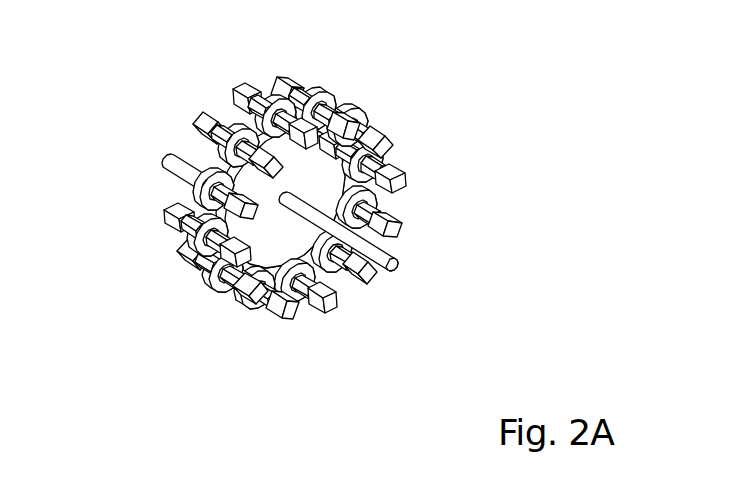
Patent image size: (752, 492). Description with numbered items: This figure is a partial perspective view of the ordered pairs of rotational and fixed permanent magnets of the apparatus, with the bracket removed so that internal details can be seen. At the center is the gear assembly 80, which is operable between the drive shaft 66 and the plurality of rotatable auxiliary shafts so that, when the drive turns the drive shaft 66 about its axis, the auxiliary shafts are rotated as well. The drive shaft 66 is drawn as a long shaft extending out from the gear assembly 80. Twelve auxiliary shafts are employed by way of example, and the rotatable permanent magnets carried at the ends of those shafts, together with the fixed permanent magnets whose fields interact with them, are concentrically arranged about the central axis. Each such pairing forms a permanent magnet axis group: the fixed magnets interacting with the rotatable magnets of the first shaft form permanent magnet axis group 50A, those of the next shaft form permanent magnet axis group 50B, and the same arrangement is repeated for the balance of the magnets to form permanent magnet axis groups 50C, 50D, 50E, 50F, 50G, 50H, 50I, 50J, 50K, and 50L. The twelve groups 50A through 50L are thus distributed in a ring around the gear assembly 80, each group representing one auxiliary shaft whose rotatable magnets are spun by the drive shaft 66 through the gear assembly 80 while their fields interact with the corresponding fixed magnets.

The permanent magnet axis group 50A is at (155, 163).
The permanent magnet axis group 50B is at (185, 110).
The permanent magnet axis group 50C is at (230, 72).
The permanent magnet axis group 50D is at (312, 70).
The permanent magnet axis group 50E is at (380, 118).
The permanent magnet axis group 50F is at (408, 172).
The permanent magnet axis group 50G is at (393, 232).
The permanent magnet axis group 50H is at (376, 288).
The permanent magnet axis group 50I is at (323, 317).
The permanent magnet axis group 50J is at (267, 330).
The permanent magnet axis group 50K is at (173, 268).
The permanent magnet axis group 50L is at (155, 227).
The gear assembly 80 is at (313, 191).
The drive shaft 66 is at (393, 255).